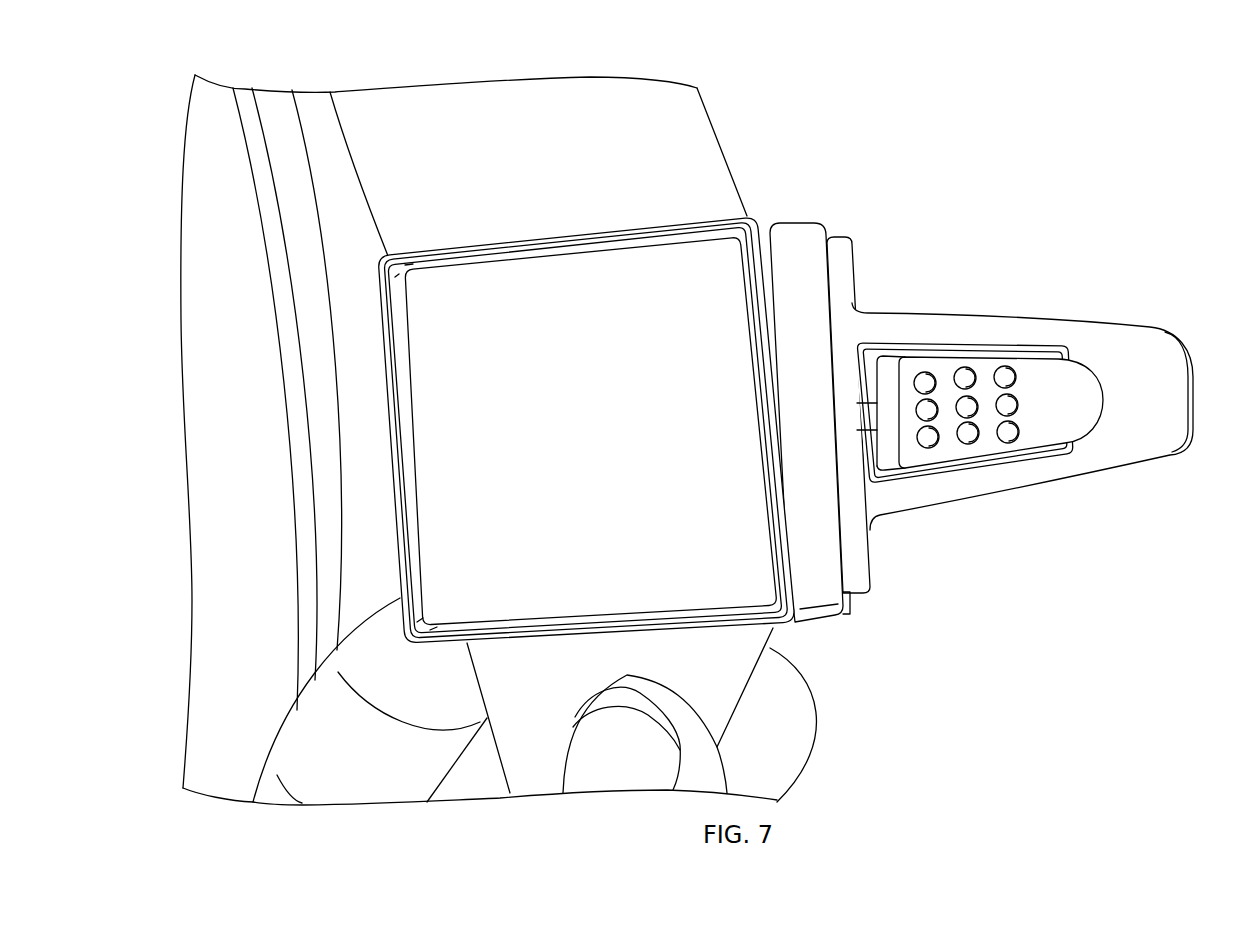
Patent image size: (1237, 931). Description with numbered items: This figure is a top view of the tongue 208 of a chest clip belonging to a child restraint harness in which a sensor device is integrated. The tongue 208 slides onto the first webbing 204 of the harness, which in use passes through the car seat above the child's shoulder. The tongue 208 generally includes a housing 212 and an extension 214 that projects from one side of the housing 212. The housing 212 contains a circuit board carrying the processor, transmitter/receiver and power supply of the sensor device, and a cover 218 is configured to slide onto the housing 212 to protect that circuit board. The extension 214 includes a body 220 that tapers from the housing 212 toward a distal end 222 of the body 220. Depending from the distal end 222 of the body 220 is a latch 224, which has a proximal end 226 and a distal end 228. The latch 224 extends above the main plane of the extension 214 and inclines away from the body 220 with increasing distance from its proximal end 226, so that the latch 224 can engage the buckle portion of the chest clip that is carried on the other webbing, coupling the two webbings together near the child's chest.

The first webbing 204 is at (473, 125).
The tongue 208 is at (890, 700).
The housing 212 is at (868, 610).
The extension 214 is at (1022, 446).
The cover 218 is at (578, 444).
The body 220 is at (1083, 483).
The distal end 222 is at (1157, 463).
The latch 224 is at (925, 460).
The proximal end 226 is at (1060, 350).
The distal end 228 is at (888, 367).